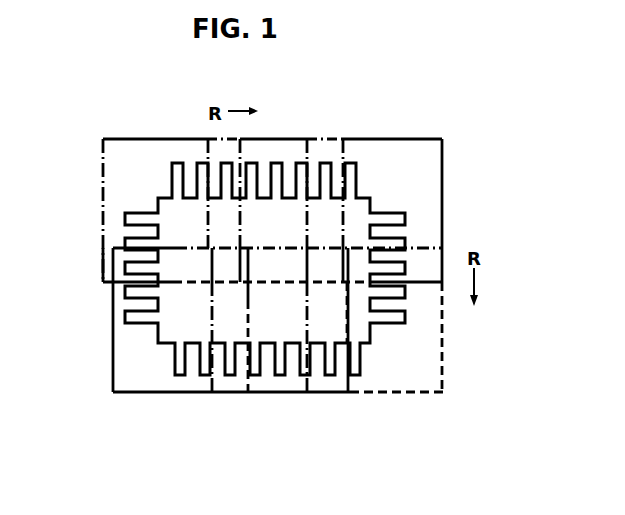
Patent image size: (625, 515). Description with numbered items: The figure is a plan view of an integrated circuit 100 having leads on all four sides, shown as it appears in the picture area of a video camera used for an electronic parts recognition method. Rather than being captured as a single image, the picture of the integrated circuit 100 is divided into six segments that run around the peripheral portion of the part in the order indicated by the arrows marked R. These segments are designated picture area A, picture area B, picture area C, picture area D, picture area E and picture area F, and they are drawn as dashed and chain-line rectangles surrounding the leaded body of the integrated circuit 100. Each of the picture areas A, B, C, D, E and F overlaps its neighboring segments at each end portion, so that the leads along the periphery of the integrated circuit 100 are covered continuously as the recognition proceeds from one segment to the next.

The integrated circuit 100 is at (180, 318).
The picture area A is at (160, 153).
The picture area B is at (293, 148).
The picture area C is at (410, 152).
The picture area D is at (403, 373).
The picture area E is at (285, 383).
The picture area F is at (162, 372).